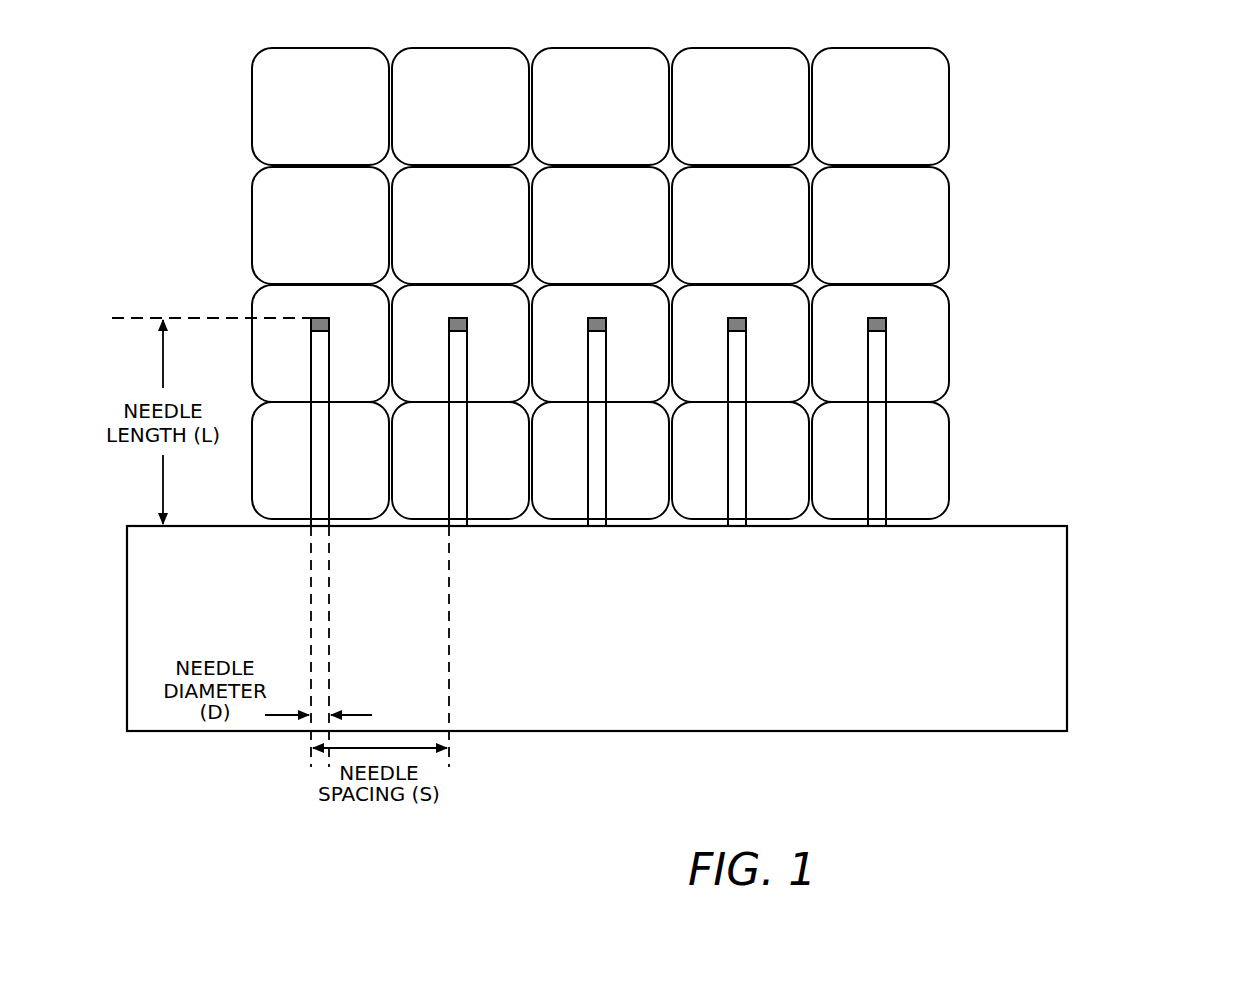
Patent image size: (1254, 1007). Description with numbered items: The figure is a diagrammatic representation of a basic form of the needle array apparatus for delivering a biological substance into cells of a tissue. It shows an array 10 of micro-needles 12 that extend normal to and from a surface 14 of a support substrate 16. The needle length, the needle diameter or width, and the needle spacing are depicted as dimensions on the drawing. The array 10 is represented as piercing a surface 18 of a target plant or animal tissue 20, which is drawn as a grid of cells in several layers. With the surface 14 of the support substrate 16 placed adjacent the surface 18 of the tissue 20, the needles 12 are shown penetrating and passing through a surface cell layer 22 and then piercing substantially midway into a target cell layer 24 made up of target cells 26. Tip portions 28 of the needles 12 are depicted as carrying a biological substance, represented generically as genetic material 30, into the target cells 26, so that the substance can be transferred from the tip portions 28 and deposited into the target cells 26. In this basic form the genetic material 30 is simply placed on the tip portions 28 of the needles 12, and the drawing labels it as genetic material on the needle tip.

The array 10 is at (614, 331).
The micro-needles 12 is at (319, 372).
The surface 14 is at (1013, 525).
The support substrate 16 is at (984, 734).
The surface 18 is at (913, 519).
The target tissue 20 is at (952, 94).
The surface cell layer 22 is at (952, 440).
The target cell layer 24 is at (632, 343).
The target cells 26 is at (286, 305).
The tip portions 28 is at (330, 326).
The genetic material 30 is at (881, 304).